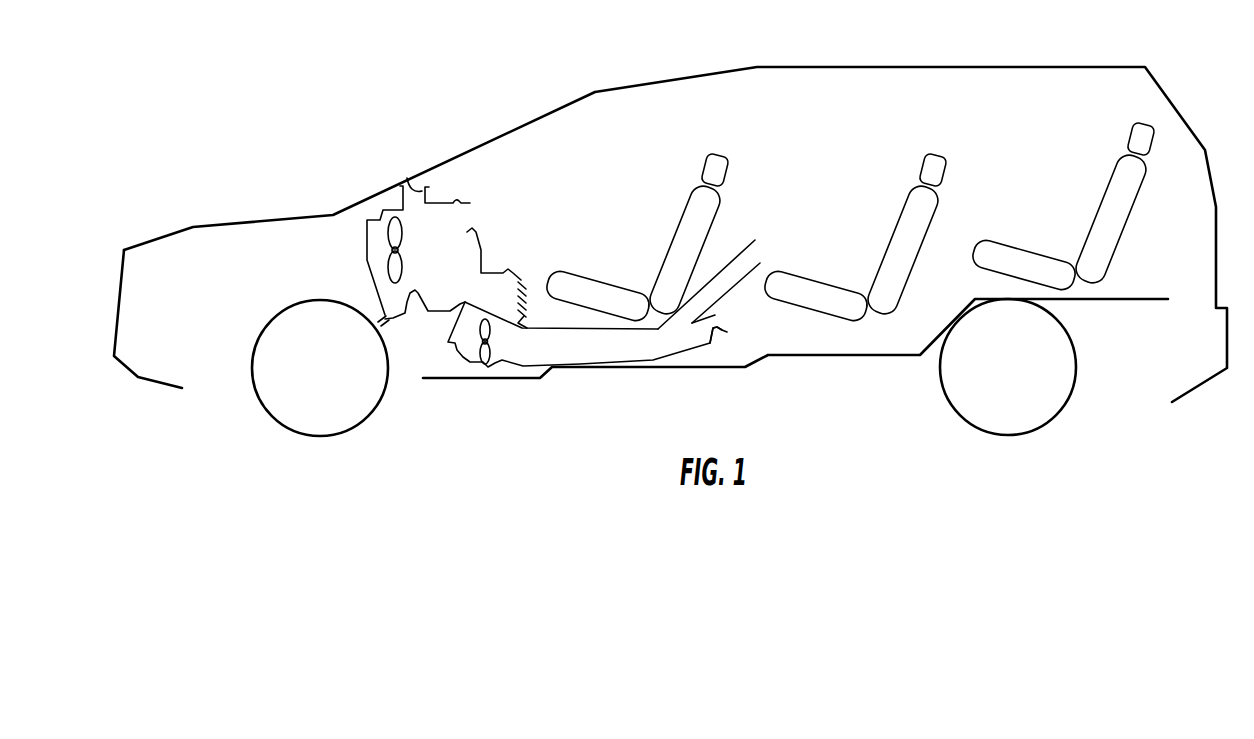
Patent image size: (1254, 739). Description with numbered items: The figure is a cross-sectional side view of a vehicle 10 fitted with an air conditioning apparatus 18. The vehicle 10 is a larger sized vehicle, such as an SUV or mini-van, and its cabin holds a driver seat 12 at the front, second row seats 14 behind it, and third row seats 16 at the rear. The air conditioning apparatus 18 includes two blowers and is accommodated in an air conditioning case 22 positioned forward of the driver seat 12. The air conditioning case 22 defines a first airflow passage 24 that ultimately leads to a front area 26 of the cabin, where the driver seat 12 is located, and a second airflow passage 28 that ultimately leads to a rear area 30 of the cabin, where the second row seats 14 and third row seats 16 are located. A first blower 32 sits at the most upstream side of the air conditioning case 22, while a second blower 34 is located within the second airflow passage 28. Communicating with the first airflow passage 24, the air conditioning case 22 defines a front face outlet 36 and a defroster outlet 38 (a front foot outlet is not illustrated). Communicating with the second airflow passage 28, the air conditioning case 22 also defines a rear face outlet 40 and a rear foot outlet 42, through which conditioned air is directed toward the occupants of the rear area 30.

The vehicle 10 is at (860, 65).
The driver seat 12 is at (680, 227).
The second row seats 14 is at (898, 227).
The third row seats 16 is at (1110, 197).
The air conditioning apparatus 18 is at (505, 237).
The air conditioning case 22 is at (482, 250).
The first airflow passage 24 is at (447, 260).
The front area 26 is at (620, 188).
The second airflow passage 28 is at (510, 310).
The rear area 30 is at (839, 188).
The first blower 32 is at (388, 228).
The second blower 34 is at (481, 360).
The front face outlet 36 is at (470, 203).
The defroster outlet 38 is at (407, 178).
The rear face outlet 40 is at (757, 248).
The rear foot outlet 42 is at (722, 330).